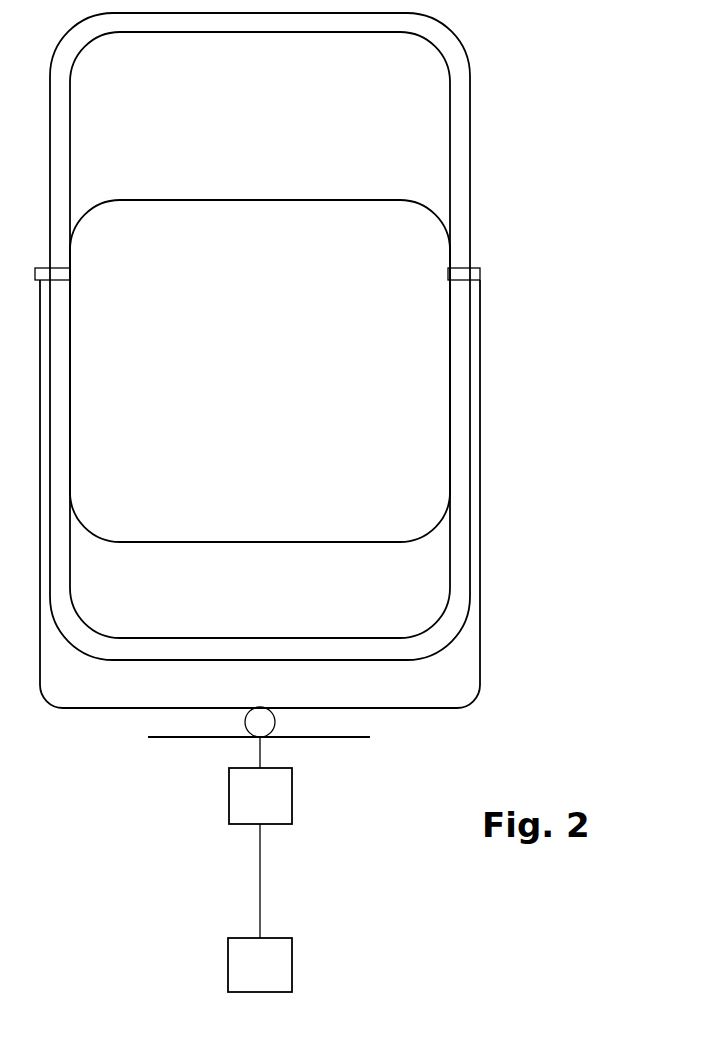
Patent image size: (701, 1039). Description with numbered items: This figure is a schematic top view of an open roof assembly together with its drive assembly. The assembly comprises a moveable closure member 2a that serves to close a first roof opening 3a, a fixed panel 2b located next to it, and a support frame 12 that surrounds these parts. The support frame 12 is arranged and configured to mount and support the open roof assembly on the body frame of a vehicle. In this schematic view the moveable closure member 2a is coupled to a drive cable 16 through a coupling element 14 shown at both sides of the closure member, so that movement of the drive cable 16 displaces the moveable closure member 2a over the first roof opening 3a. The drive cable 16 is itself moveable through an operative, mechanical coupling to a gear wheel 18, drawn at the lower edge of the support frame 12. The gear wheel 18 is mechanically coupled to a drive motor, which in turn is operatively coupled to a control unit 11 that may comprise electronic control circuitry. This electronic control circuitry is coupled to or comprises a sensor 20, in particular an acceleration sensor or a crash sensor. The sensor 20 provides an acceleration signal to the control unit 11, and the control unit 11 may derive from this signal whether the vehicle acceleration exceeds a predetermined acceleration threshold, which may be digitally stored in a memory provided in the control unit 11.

The support frame 12 is at (460, 160).
The coupling element 14 is at (463, 278).
The drive cable 16 is at (480, 377).
The gear wheel 18 is at (258, 720).
The control unit 11 is at (249, 809).
The sensor 20 is at (249, 978).
The moveable closure member 2a is at (235, 396).
The fixed panel 2b is at (259, 601).
The first roof opening 3a is at (243, 125).